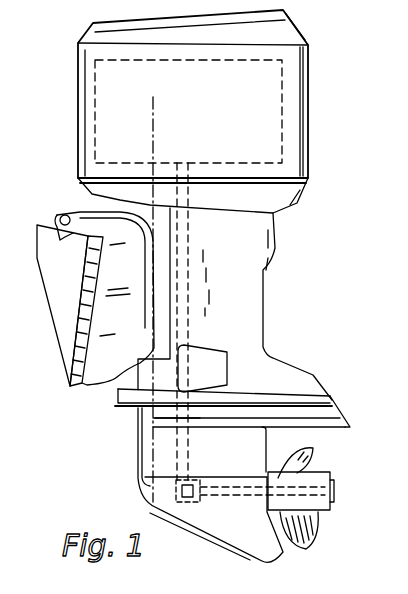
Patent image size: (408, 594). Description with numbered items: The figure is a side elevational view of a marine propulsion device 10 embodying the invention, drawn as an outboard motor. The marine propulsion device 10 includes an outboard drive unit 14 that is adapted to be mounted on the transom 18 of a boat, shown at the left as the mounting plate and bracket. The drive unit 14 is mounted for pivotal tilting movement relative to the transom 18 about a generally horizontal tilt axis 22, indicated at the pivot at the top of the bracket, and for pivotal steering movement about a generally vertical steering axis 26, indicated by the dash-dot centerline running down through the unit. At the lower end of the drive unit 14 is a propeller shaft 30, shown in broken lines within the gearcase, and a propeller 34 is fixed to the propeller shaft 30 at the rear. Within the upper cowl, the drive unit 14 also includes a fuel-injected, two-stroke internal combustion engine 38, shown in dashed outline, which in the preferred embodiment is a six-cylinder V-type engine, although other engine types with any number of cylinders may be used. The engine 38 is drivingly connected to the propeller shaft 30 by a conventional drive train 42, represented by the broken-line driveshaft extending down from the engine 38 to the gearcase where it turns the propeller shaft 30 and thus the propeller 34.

The marine propulsion device 10 is at (330, 130).
The outboard drive unit 14 is at (275, 297).
The transom 18 is at (75, 295).
The tilt axis 22 is at (68, 214).
The steering axis 26 is at (153, 97).
The propeller shaft 30 is at (243, 480).
The propeller 34 is at (318, 528).
The internal combustion engine 38 is at (250, 88).
The drive train 42 is at (150, 436).